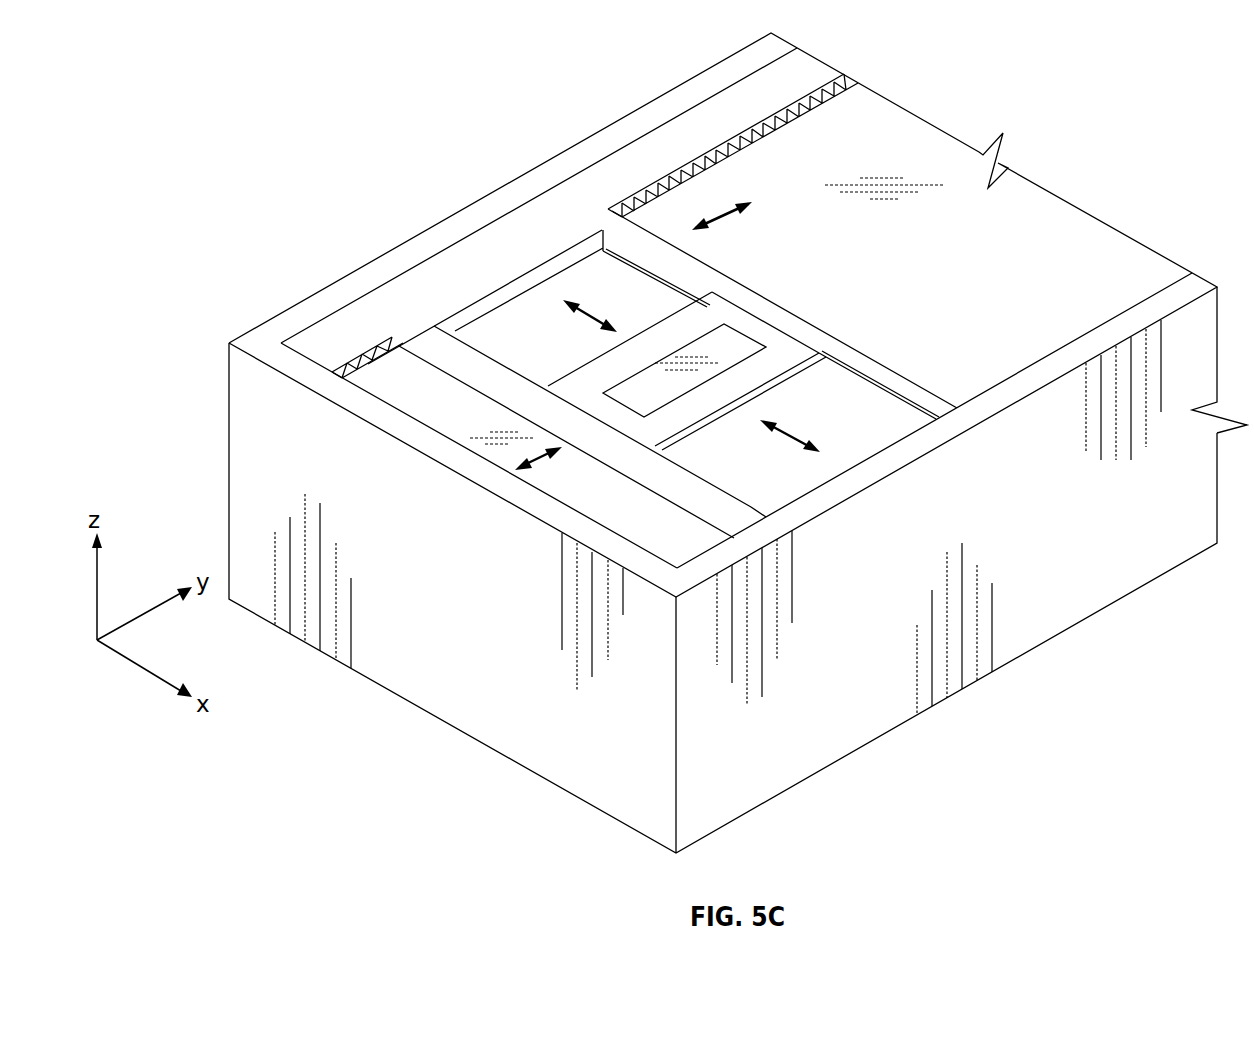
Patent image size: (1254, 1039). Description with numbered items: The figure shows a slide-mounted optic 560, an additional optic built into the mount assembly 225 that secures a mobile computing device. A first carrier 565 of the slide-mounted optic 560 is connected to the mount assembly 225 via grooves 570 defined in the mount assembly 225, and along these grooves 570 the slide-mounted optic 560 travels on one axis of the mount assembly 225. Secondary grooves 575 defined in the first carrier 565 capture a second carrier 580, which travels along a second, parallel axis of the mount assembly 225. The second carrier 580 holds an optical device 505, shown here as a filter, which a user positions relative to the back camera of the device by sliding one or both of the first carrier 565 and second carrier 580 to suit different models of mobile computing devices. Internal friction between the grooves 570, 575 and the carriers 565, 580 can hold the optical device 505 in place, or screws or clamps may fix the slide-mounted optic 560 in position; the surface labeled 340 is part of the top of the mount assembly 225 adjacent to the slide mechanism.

The slide-mounted optic 560 is at (407, 127).
The grooves 570 is at (705, 152).
The first carrier 565 is at (432, 333).
The secondary grooves 575 is at (672, 280).
The second carrier 580 is at (782, 345).
The optical device 505 is at (655, 380).
The top surface 340 is at (1025, 225).
The mount assembly 225 is at (897, 685).